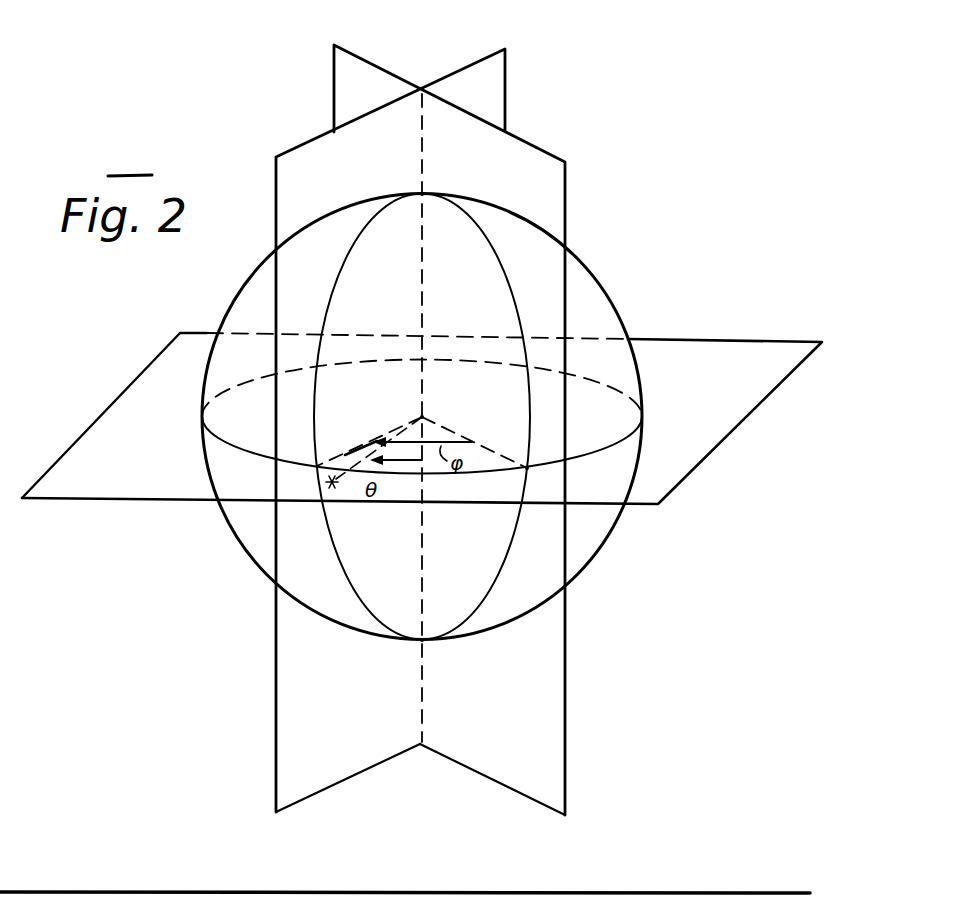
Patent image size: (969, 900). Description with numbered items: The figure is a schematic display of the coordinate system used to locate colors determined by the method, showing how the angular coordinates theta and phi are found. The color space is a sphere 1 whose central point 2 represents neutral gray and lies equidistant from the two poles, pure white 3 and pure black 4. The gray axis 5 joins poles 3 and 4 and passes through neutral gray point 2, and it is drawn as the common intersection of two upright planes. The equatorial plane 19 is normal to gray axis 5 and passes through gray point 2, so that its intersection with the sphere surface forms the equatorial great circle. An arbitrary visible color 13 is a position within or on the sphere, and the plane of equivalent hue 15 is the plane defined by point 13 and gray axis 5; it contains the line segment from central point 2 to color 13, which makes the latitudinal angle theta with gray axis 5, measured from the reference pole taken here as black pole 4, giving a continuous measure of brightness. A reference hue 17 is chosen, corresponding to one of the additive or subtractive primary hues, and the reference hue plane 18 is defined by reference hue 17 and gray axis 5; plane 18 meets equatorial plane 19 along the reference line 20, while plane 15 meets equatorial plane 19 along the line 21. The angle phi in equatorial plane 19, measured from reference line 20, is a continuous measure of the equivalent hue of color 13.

The sphere 1 is at (604, 275).
The central point 2 is at (426, 415).
The pure white pole 3 is at (422, 194).
The pure black pole 4 is at (425, 641).
The gray axis 5 is at (430, 270).
The visible color 13 is at (336, 487).
The plane of equivalent hue 15 is at (276, 712).
The reference hue 17 is at (529, 470).
The reference hue plane 18 is at (568, 714).
The equatorial plane 19 is at (702, 463).
The reference line 20 is at (498, 453).
The line of intersection of the plane of equivalent hue 21 is at (346, 452).